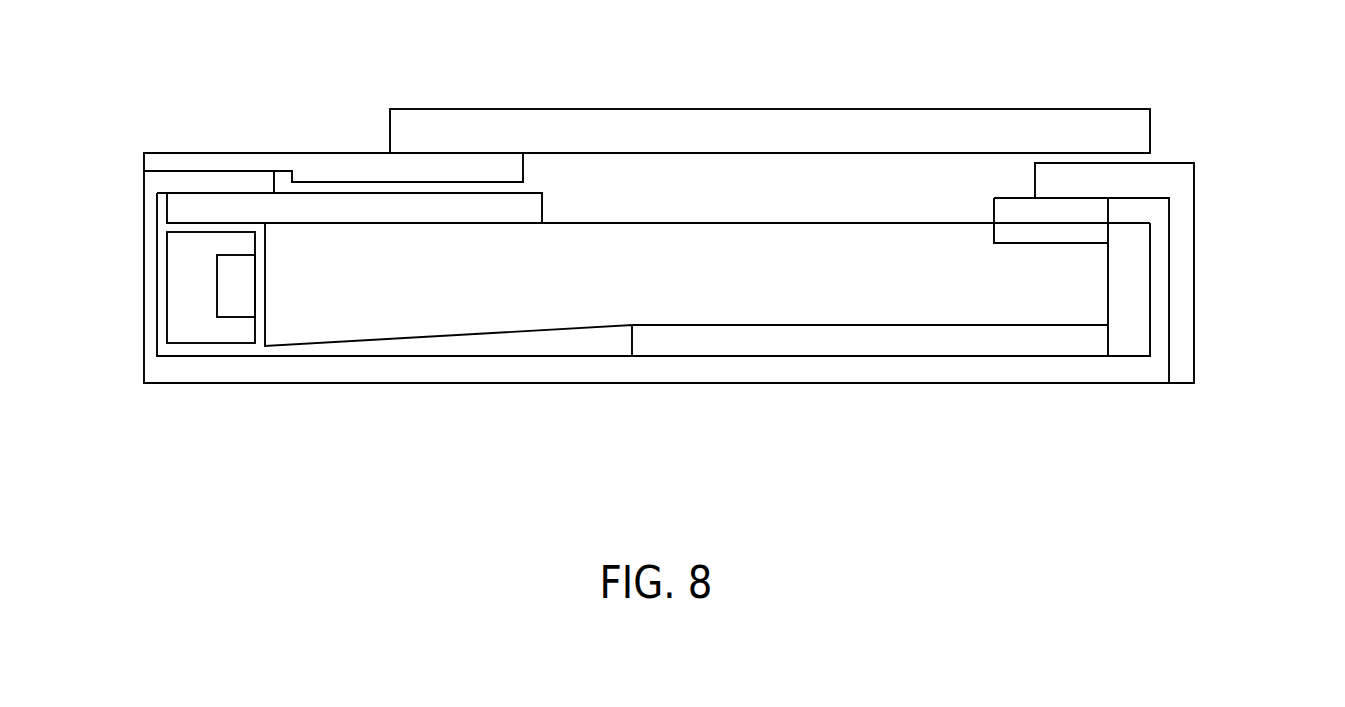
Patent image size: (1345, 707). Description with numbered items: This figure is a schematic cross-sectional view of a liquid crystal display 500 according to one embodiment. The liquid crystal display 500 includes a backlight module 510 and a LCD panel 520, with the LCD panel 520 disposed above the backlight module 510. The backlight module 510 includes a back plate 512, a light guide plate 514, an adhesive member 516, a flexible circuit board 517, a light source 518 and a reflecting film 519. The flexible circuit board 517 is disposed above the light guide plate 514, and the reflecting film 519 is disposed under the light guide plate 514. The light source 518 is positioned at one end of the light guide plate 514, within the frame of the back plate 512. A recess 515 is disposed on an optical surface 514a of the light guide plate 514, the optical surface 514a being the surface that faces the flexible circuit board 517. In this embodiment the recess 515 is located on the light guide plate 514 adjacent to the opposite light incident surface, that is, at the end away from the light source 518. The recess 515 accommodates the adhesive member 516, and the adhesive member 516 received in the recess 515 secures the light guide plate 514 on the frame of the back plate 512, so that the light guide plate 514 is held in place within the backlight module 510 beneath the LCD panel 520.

The liquid crystal display 500 is at (92, 80).
The backlight module 510 is at (1214, 210).
The back plate 512 is at (1160, 297).
The light guide plate 514 is at (713, 300).
The optical surface 514a is at (700, 222).
The recess 515 is at (1040, 244).
The adhesive member 516 is at (1079, 233).
The flexible circuit board 517 is at (177, 208).
The light source 518 is at (182, 293).
The reflecting film 519 is at (838, 337).
The LCD panel 520 is at (925, 125).